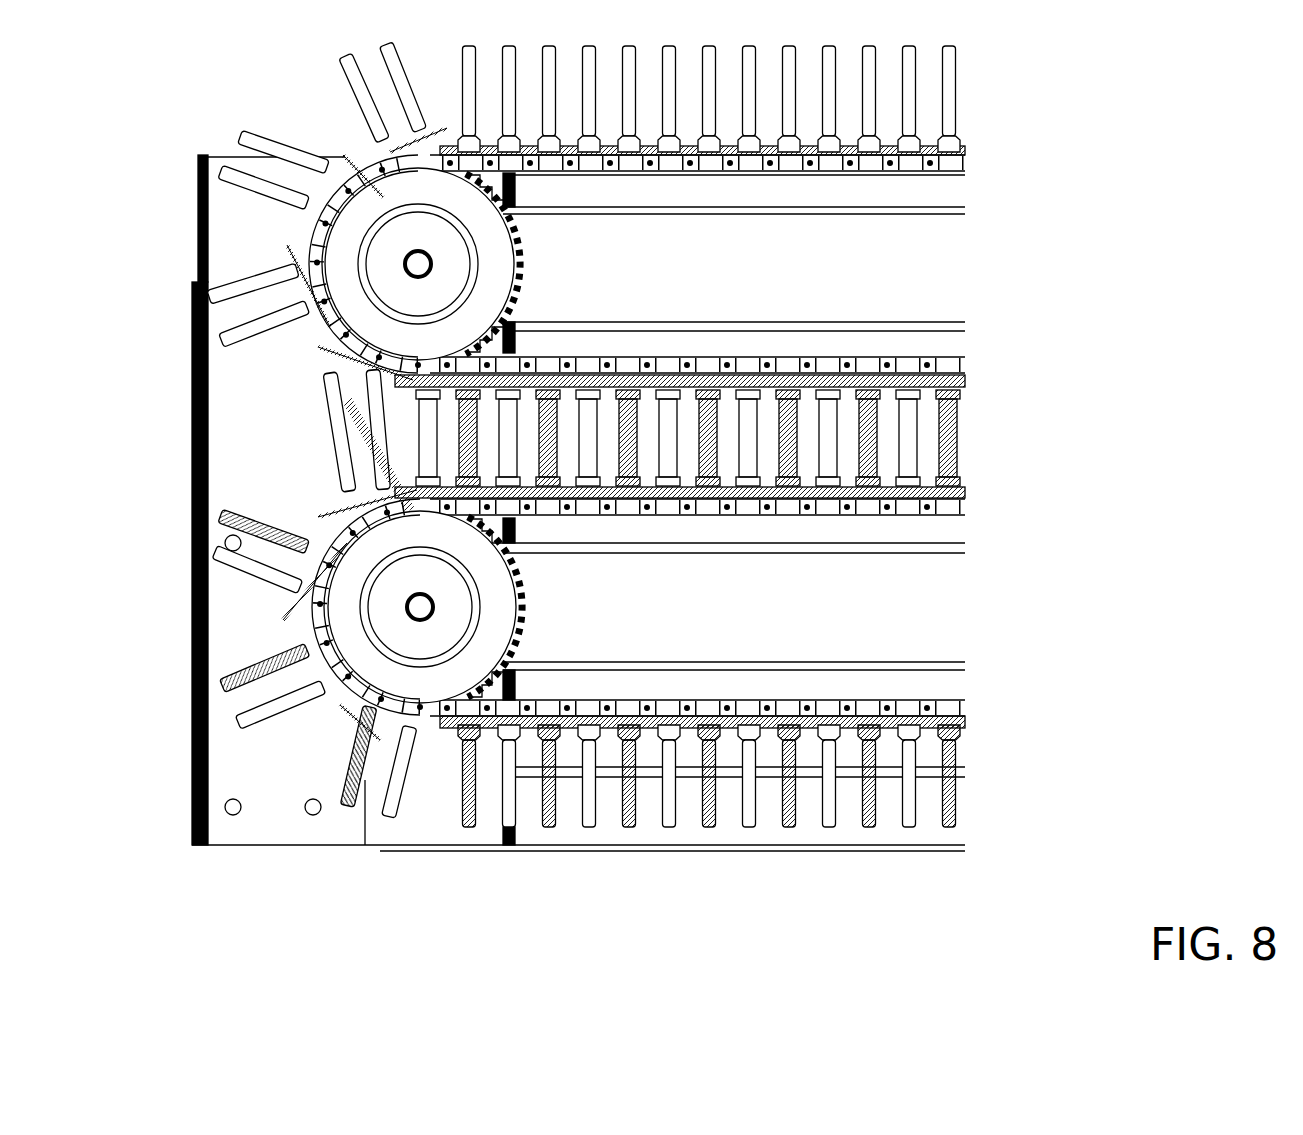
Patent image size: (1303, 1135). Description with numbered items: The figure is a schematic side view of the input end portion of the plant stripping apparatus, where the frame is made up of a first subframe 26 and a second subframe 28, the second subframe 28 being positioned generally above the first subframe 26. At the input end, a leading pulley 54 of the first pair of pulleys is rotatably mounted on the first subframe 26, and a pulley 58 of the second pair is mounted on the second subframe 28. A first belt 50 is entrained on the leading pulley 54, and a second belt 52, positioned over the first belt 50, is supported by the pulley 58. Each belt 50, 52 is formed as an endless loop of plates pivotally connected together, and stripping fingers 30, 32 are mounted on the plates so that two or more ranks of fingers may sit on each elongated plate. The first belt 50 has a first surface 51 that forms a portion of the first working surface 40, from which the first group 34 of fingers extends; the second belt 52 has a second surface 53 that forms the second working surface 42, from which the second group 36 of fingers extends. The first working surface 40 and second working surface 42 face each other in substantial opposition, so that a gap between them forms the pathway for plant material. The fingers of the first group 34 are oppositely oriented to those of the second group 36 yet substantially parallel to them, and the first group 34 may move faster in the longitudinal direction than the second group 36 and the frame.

The first subframe 26 is at (745, 705).
The second subframe 28 is at (739, 165).
The stripping finger 30 is at (255, 665).
The stripping finger 32 is at (250, 345).
The first group of stripping fingers 34 is at (968, 482).
The second group of stripping fingers 36 is at (977, 397).
The first working surface 40 is at (945, 484).
The second working surface 42 is at (942, 397).
The first belt 50 is at (950, 700).
The first surface 51 is at (930, 732).
The second belt 52 is at (945, 368).
The second surface 53 is at (930, 153).
The leading pulley 54 is at (420, 680).
The pulley of second pair 58 is at (385, 195).